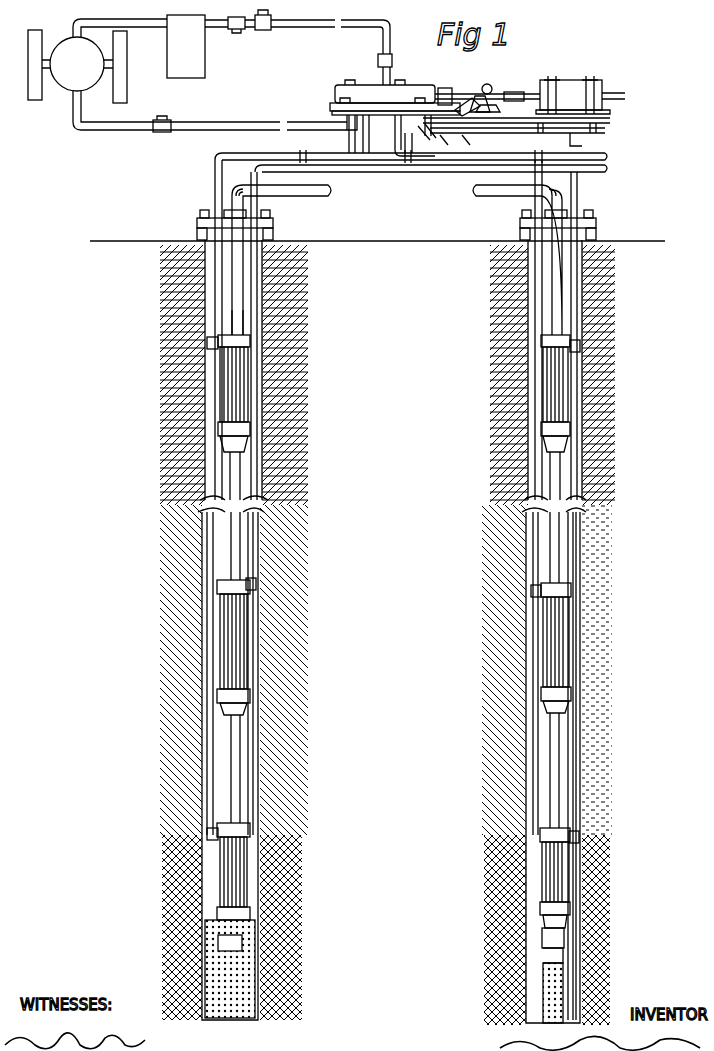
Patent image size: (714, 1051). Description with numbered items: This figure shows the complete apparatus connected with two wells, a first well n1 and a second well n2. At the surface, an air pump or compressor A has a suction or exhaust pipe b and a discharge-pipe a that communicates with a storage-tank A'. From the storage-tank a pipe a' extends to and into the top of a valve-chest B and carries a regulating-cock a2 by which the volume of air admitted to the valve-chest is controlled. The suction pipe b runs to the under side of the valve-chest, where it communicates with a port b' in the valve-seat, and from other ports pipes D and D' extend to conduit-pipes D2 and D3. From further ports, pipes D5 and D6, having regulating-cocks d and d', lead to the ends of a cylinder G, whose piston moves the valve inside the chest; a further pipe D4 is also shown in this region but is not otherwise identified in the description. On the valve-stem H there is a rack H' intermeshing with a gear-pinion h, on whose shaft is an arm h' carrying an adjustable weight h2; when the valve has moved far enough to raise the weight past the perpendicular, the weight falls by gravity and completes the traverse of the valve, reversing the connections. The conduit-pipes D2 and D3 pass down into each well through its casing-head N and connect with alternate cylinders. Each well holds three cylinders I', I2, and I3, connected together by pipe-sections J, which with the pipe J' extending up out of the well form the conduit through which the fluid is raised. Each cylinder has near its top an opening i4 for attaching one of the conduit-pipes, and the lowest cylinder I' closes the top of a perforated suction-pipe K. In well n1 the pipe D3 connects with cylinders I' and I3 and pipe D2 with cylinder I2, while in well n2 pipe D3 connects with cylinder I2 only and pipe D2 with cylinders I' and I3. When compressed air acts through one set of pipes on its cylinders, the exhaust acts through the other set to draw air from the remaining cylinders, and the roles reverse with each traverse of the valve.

The air pump or compressor A is at (77, 66).
The storage-tank A' is at (186, 46).
The discharge-pipe a is at (150, 36).
The pipe a' is at (309, 33).
The regulating-cock a2 is at (403, 55).
The valve-chest B is at (406, 85).
The suction or exhaust pipe b is at (215, 111).
The port b' is at (434, 136).
The valve-stem H is at (487, 85).
The gear-pinion h is at (495, 75).
The arm h' is at (480, 86).
The rack H' is at (498, 89).
The adjustable weight h2 is at (462, 107).
The cylinder G is at (580, 95).
The pipe D is at (416, 150).
The pipe D' is at (412, 144).
The conduit-pipe D2 is at (265, 205).
The conduit-pipe D3 is at (529, 487).
The pipe D4 is at (433, 121).
The pipe D5 is at (378, 125).
The pipe D6 is at (573, 128).
The regulating-cock d is at (475, 142).
The regulating-cock d' is at (454, 142).
The pipe-sections J is at (393, 670).
The pipe J' is at (397, 259).
The casing-head N is at (189, 214).
The well No. 1 n1 is at (185, 264).
The well No. 2 n2 is at (515, 266).
The cylinder I' is at (393, 893).
The cylinder I2 is at (255, 629).
The cylinder I3 is at (245, 387).
The opening i4 is at (207, 343).
The perforated suction-pipe K is at (250, 968).